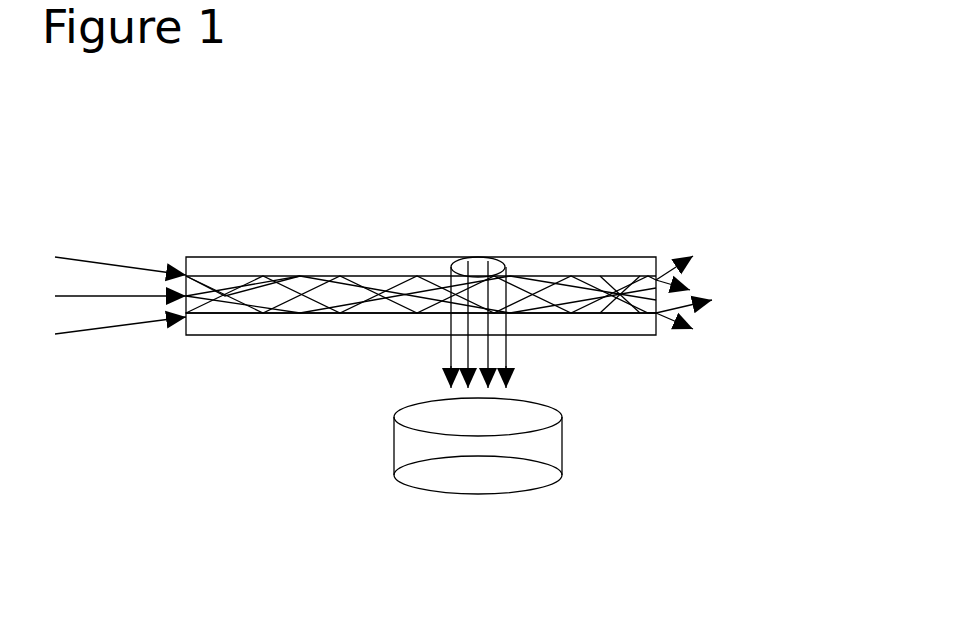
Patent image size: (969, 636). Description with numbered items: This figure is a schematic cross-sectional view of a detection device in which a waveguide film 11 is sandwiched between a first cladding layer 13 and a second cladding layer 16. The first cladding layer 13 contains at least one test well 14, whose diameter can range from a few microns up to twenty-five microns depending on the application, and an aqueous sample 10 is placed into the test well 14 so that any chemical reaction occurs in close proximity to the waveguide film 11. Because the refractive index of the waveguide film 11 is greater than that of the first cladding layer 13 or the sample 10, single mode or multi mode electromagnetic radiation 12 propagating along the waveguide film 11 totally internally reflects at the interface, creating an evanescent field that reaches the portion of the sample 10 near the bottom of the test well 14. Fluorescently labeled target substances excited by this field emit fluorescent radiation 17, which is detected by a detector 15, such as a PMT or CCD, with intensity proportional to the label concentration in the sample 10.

The aqueous sample 10 is at (483, 271).
The waveguide film 11 is at (656, 280).
The electromagnetic radiation 12 is at (73, 338).
The first cladding layer 13 is at (257, 273).
The test well 14 is at (463, 252).
The detector 15 is at (557, 435).
The second cladding layer 16 is at (656, 335).
The fluorescent radiation 17 is at (532, 363).